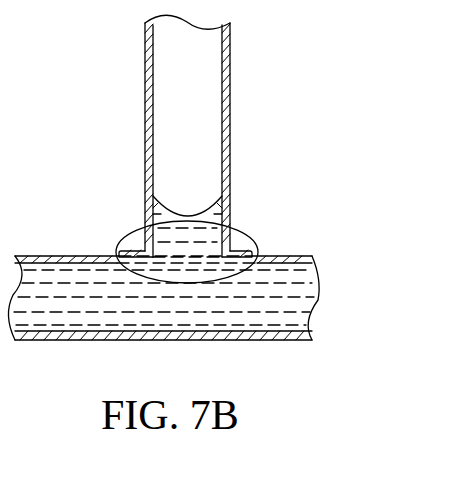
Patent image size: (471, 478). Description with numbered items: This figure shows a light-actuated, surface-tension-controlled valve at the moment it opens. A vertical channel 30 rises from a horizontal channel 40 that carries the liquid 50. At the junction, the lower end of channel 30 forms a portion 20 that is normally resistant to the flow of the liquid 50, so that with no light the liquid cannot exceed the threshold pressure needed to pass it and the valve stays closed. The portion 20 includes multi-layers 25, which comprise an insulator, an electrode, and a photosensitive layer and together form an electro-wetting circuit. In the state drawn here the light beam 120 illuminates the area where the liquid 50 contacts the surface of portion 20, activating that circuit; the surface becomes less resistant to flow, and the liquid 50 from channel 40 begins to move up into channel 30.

The channel 30 is at (236, 23).
The multi-layers 25 is at (157, 204).
The portion of channel 20 is at (113, 207).
The light beam 120 is at (247, 242).
The liquid 50 is at (191, 318).
The channel 40 is at (68, 339).